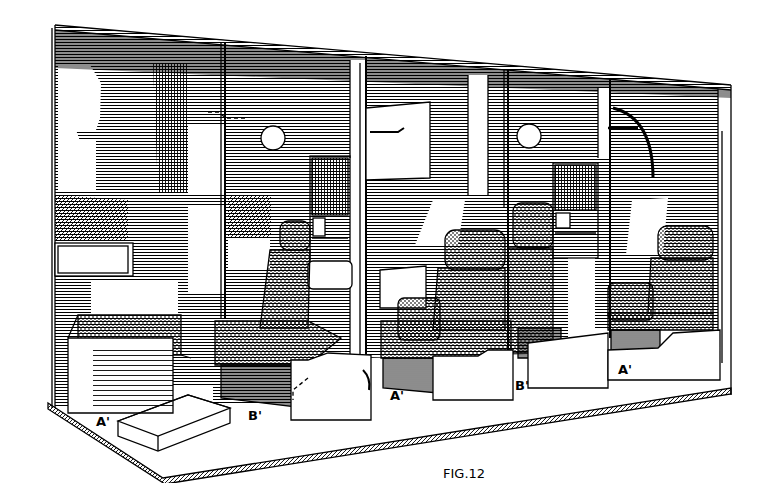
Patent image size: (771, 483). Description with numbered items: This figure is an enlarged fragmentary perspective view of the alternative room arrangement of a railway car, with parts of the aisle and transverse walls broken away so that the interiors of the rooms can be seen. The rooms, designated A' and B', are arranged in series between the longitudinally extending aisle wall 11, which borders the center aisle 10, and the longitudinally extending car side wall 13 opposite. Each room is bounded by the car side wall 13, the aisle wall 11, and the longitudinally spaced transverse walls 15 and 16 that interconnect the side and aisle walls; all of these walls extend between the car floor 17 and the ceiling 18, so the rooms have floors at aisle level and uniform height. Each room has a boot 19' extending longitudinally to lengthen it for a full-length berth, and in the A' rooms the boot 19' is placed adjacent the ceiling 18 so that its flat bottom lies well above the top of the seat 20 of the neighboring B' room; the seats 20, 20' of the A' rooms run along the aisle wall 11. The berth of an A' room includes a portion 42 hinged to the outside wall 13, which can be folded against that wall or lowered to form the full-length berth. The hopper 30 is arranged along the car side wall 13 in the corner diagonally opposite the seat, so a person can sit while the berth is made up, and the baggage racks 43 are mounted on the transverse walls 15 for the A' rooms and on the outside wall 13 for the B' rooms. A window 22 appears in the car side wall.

The center aisle 10 is at (434, 419).
The aisle wall 11 is at (318, 414).
The car side wall 13 is at (391, 216).
The transverse wall 15 is at (344, 53).
The transverse wall 16 is at (207, 40).
The car floor 17 is at (82, 418).
The ceiling 18 is at (370, 44).
The boot 19' is at (281, 268).
The seat 20 is at (391, 305).
The seat 20' is at (684, 296).
The window 22 is at (94, 235).
The hopper 30 is at (438, 375).
The hinged berth portion 42 is at (640, 68).
The baggage rack 43 is at (398, 112).